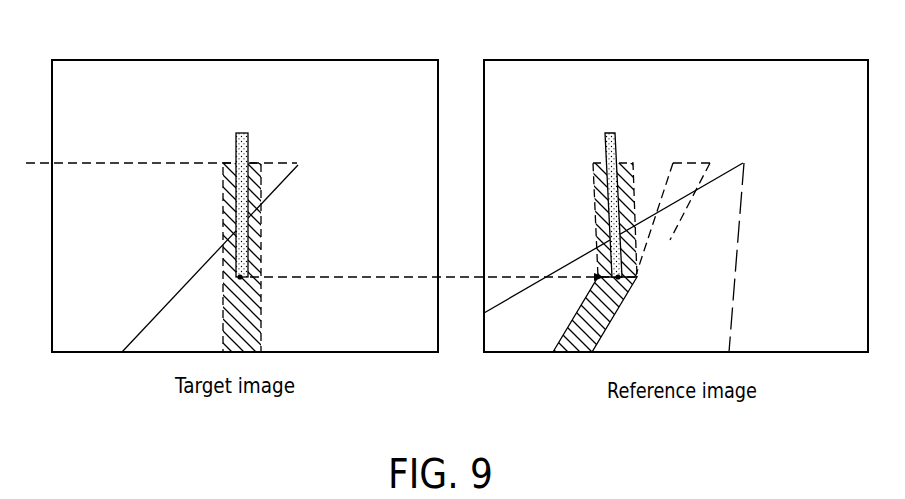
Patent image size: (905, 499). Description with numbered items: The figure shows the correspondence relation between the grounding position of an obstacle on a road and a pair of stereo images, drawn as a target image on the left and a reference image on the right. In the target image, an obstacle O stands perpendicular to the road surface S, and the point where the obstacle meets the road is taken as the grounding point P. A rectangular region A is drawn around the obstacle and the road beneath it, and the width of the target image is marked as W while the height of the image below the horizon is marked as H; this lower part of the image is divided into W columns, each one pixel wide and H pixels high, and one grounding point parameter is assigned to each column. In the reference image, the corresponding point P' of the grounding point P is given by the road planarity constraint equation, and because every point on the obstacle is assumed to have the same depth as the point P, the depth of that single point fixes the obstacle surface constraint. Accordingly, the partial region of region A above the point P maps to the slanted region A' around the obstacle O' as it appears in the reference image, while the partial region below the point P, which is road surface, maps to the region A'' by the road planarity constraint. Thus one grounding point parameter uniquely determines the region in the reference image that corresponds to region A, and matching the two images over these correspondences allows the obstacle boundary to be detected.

The width of the target image W is at (56, 46).
The height of the image below the horizon H is at (38, 165).
The rectangular region A is at (200, 231).
The obstacle O is at (273, 182).
The road surface S is at (327, 205).
The grounding point P is at (206, 311).
The region corresponding to the partial region above point P A' is at (564, 207).
The region corresponding to the partial region below point P A'' is at (635, 314).
The obstacle in reference image O' is at (613, 205).
The corresponding point P' is at (647, 290).